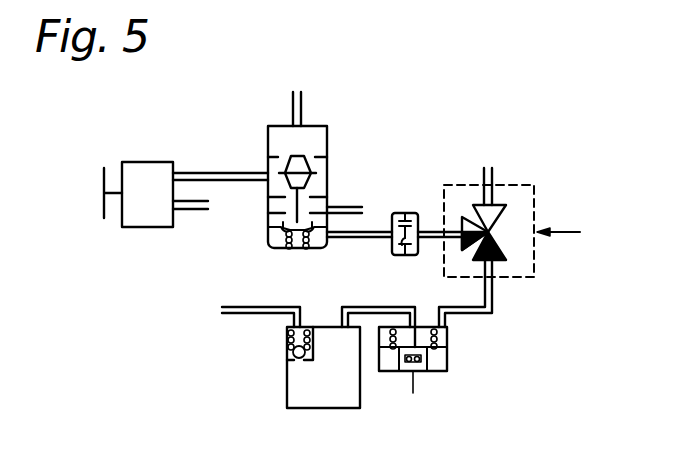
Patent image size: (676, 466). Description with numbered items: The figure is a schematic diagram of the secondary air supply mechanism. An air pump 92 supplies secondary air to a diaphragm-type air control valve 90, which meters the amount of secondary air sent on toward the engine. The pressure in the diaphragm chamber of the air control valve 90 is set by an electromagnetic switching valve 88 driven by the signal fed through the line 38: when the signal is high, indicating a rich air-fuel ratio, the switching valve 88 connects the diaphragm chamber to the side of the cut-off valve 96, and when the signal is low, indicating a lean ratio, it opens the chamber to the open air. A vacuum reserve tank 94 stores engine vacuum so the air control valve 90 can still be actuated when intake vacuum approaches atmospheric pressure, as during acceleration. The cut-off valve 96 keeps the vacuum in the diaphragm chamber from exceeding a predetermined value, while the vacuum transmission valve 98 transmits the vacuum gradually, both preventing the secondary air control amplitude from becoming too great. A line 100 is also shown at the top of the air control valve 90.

The line 38 is at (571, 232).
The electromagnetic switching valve 88 is at (516, 182).
The diaphragm-type air control valve 90 is at (328, 138).
The air pump 92 is at (153, 162).
The vacuum reserve tank 94 is at (293, 387).
The cut-off valve 96 is at (447, 362).
The vacuum transmission valve 98 is at (406, 212).
The vent line 100 is at (293, 104).